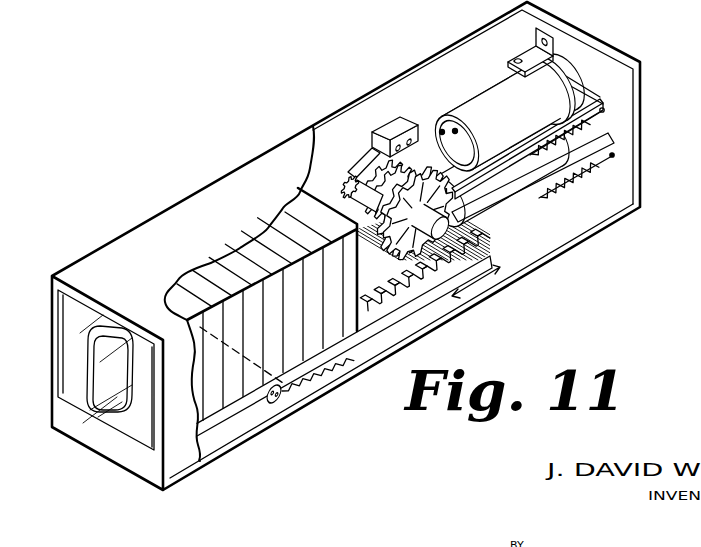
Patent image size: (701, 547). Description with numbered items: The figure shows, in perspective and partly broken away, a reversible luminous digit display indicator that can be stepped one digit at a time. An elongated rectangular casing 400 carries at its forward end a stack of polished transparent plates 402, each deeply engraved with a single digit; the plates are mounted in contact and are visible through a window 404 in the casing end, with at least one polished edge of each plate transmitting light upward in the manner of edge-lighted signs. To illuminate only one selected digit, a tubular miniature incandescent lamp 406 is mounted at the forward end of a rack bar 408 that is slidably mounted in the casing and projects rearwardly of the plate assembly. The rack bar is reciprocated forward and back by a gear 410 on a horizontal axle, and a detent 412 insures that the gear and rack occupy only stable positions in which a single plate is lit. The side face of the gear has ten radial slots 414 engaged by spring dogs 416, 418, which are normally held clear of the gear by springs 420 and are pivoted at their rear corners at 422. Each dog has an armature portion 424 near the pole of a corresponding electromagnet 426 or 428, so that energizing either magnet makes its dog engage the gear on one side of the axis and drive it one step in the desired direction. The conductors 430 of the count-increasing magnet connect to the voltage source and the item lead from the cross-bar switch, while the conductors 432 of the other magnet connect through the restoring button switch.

The elongated rectangular casing 400 is at (243, 166).
The polished transparent plates 402 is at (245, 252).
The window 404 is at (84, 312).
The miniature incandescent lamp 406 is at (274, 402).
The rack bar 408 is at (417, 312).
The gear 410 is at (368, 160).
The detent 412 is at (374, 145).
The radial slots 414 is at (358, 268).
The spring dog 416 is at (522, 140).
The spring dog 418 is at (493, 216).
The springs 420 is at (617, 153).
The pivot 422 is at (512, 58).
The armature portion 424 is at (563, 100).
The electromagnet 426 is at (497, 106).
The electromagnet 428 is at (502, 190).
The conductors 430 is at (455, 128).
The conductors 432 is at (575, 190).